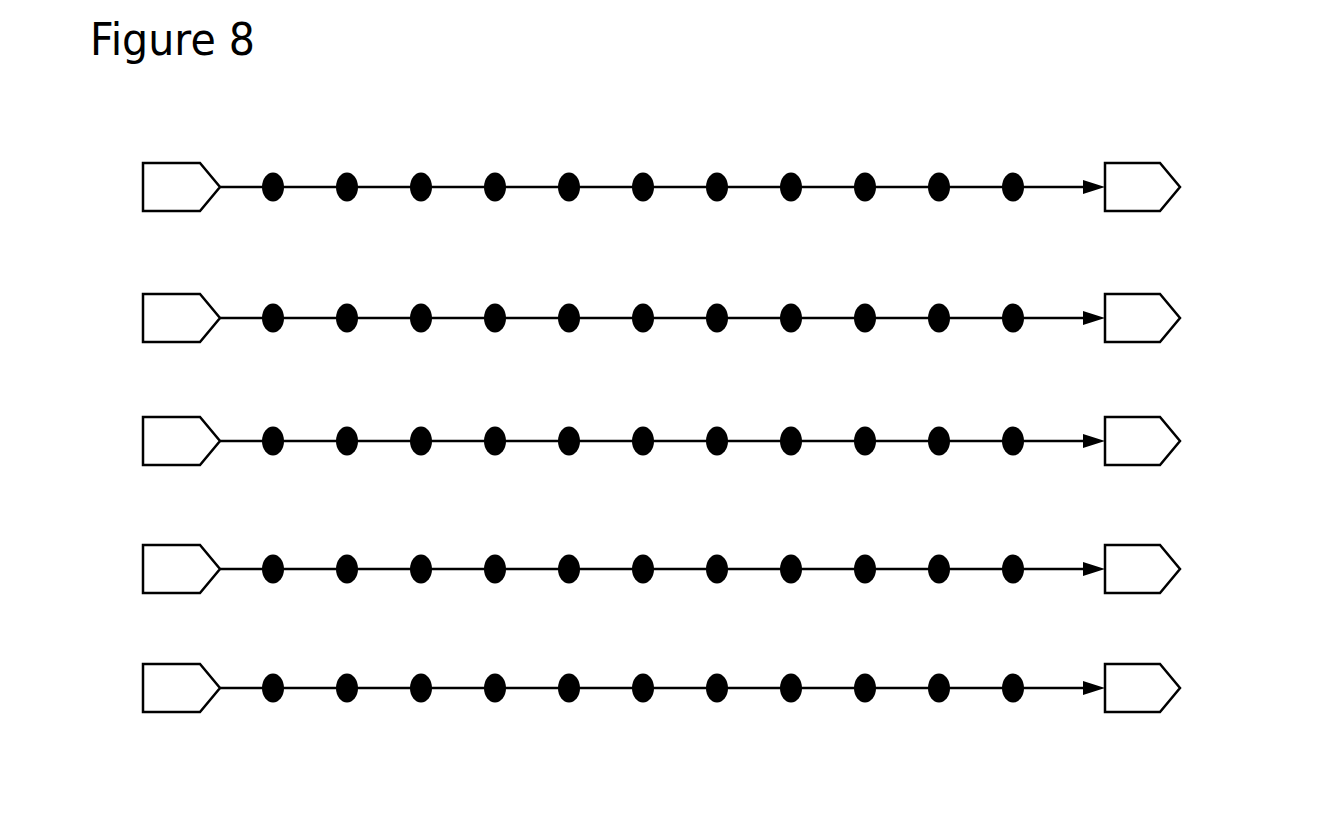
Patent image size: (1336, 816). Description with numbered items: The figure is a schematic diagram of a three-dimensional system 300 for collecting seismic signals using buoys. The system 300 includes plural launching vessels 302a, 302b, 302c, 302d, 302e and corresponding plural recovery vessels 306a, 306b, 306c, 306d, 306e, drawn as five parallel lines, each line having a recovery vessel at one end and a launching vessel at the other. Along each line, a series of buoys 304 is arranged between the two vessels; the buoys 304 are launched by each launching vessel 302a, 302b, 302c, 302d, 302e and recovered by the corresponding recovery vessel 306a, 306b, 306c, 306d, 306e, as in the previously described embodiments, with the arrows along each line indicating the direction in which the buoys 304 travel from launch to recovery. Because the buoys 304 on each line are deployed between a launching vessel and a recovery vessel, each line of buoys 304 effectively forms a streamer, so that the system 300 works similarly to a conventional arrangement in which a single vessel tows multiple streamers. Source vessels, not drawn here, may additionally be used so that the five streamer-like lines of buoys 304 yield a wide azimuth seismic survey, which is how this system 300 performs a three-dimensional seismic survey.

The system 300 is at (726, 110).
The launching vessel 302a is at (1180, 188).
The launching vessel 302b is at (1180, 318).
The launching vessel 302c is at (1180, 442).
The launching vessel 302d is at (1180, 568).
The launching vessel 302e is at (1180, 688).
The buoy 304 is at (791, 702).
The recovery vessel 306a is at (143, 183).
The recovery vessel 306b is at (143, 312).
The recovery vessel 306c is at (143, 430).
The recovery vessel 306d is at (143, 560).
The recovery vessel 306e is at (143, 688).